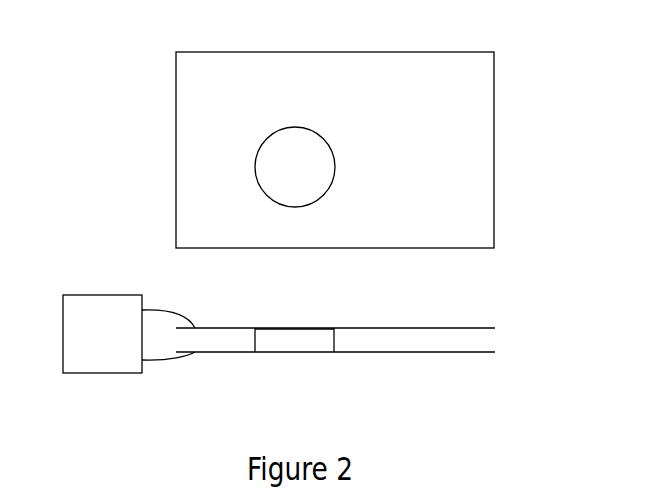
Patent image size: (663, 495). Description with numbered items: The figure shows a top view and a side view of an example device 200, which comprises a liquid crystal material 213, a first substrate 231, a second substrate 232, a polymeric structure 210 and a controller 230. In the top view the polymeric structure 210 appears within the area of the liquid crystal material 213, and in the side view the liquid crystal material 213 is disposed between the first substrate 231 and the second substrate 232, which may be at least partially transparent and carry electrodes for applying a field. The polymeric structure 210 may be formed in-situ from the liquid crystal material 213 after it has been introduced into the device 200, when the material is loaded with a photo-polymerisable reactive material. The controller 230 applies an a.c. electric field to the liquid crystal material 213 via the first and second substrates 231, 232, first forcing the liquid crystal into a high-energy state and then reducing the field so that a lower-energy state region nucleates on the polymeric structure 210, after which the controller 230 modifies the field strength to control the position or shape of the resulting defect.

The device 200 is at (150, 83).
The liquid crystal material 213 is at (245, 107).
The polymeric structure 210 is at (326, 137).
The controller 230 is at (102, 334).
The first substrate 231 is at (303, 328).
The second substrate 232 is at (238, 352).